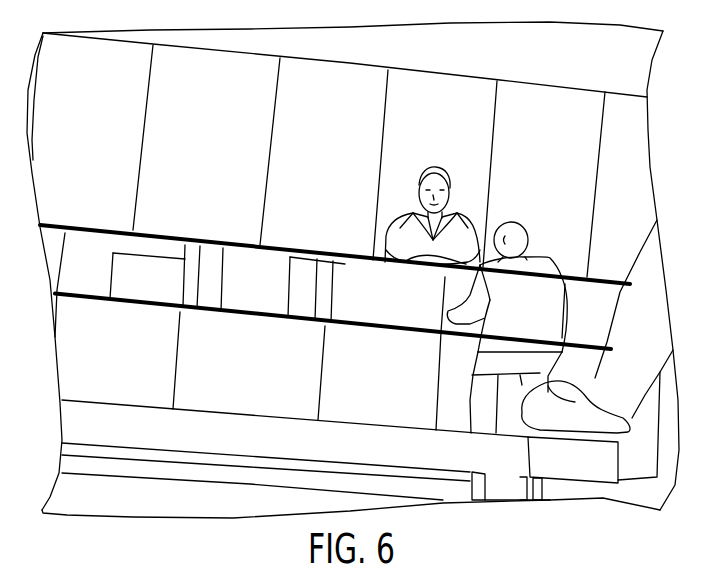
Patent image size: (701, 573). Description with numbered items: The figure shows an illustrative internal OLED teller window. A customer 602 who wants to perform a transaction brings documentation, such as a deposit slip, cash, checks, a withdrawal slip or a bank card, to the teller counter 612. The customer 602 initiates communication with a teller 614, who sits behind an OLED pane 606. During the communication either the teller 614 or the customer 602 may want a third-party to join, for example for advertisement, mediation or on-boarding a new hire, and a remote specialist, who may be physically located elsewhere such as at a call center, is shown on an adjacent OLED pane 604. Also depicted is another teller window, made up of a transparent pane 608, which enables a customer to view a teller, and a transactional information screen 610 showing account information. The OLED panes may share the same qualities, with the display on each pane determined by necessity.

The customer 602 is at (490, 354).
The OLED pane 604 is at (545, 98).
The OLED pane 606 is at (445, 97).
The transparent pane 608 is at (333, 80).
The transactional information screen 610 is at (222, 65).
The teller counter 612 is at (357, 305).
The teller 614 is at (450, 213).